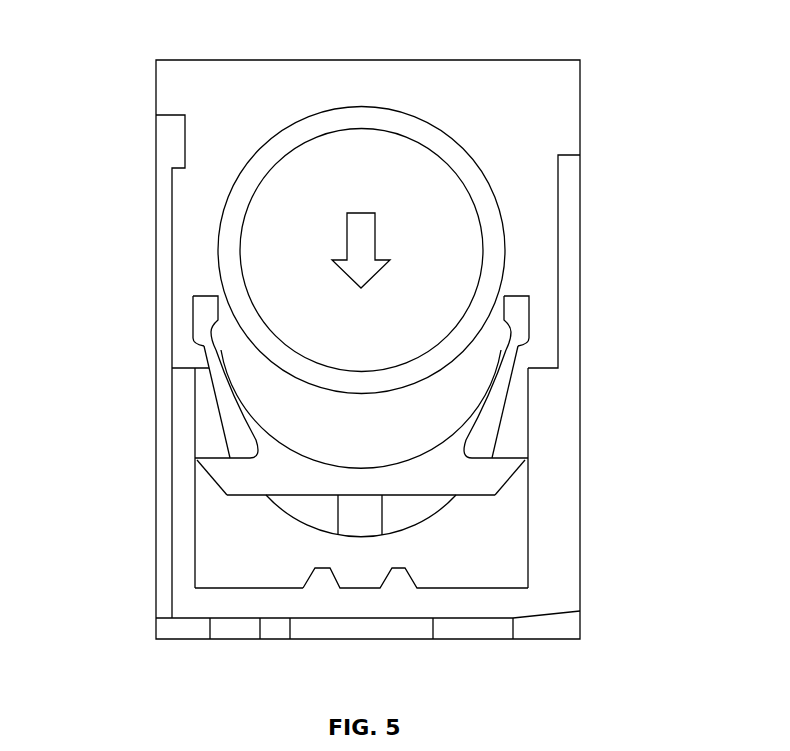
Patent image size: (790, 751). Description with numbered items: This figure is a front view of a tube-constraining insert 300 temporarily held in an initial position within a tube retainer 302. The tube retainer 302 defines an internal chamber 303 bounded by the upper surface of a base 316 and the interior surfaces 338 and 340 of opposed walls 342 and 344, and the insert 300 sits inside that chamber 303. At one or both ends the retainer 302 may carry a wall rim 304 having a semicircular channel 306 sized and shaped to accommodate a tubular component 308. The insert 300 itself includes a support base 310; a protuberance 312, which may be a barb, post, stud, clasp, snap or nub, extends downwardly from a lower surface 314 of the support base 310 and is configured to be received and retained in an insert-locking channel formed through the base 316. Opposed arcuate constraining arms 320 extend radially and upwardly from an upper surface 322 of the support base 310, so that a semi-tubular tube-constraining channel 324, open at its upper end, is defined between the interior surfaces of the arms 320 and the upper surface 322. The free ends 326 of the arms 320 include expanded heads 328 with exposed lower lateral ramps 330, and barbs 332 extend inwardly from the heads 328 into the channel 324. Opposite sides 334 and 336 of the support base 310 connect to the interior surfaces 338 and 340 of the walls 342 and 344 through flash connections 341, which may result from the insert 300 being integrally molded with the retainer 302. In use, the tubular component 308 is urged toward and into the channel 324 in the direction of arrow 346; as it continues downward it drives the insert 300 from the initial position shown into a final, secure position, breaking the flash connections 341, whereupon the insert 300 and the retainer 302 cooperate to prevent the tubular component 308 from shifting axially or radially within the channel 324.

The tube-constraining insert 300 is at (522, 250).
The tube retainer 302 is at (581, 330).
The internal chamber 303 is at (207, 186).
The wall rim 304 is at (360, 476).
The semicircular channel 306 is at (325, 536).
The tubular component 308 is at (357, 108).
The support base 310 is at (297, 496).
The protuberance 312 is at (360, 525).
The lower surface 314 is at (430, 495).
The base 316 is at (207, 605).
The constraining arms 320 is at (193, 306).
The upper surface 322 is at (297, 447).
The tube-constraining channel 324 is at (462, 425).
The free ends 326 is at (200, 296).
The expanded heads 328 is at (200, 338).
The lower lateral ramps 330 is at (208, 350).
The barbs 332 is at (237, 320).
The side of the support base 334 is at (197, 460).
The side of the support base 336 is at (528, 462).
The interior surface 338 is at (190, 494).
The interior surface 340 is at (524, 513).
The flash connections 341 is at (218, 458).
The wall 342 is at (163, 400).
The wall 344 is at (570, 277).
The arrow 346 is at (377, 238).